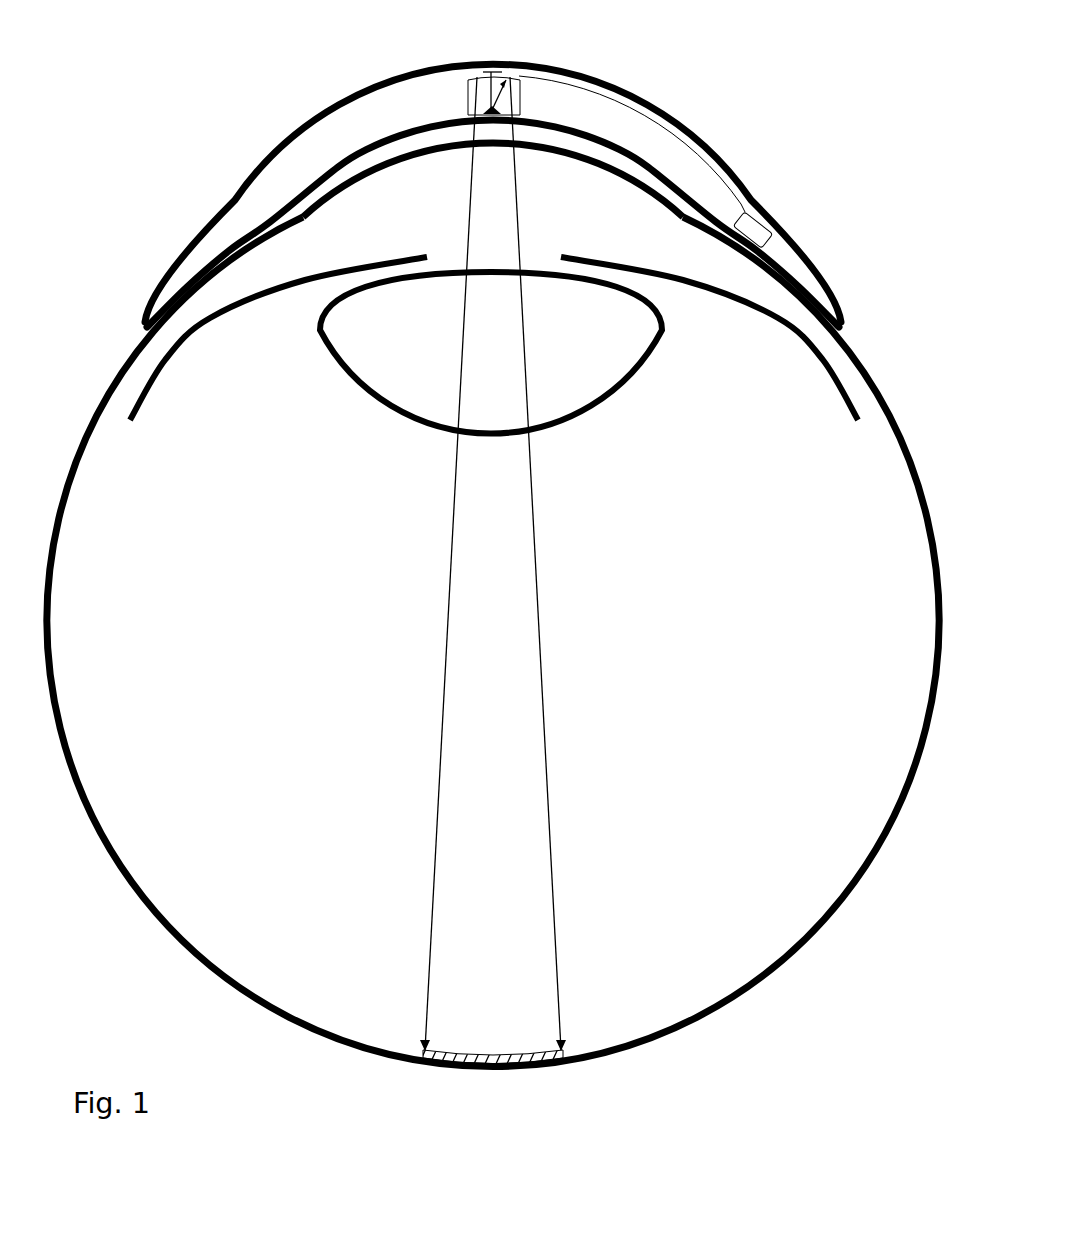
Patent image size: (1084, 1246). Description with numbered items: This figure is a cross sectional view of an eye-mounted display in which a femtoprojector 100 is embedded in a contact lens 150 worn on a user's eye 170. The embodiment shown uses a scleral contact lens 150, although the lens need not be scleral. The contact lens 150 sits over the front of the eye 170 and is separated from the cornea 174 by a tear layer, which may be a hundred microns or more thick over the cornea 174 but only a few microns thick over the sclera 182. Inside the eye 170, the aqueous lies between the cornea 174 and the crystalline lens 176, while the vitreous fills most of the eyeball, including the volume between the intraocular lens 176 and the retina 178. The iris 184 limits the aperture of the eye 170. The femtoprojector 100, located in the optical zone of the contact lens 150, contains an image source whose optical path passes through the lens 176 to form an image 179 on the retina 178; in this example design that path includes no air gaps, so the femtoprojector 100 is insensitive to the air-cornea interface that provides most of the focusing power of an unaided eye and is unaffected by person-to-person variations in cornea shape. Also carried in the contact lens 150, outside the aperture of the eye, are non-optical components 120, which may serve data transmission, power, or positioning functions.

The femtoprojector 100 is at (522, 87).
The components 120 is at (752, 219).
The contact lens 150 is at (493, 195).
The eye 170 is at (493, 642).
The cornea 174 is at (462, 199).
The crystalline lens 176 is at (445, 363).
The retina 178 is at (228, 980).
The image 179 is at (512, 1050).
The sclera 182 is at (493, 642).
The iris 184 is at (494, 335).